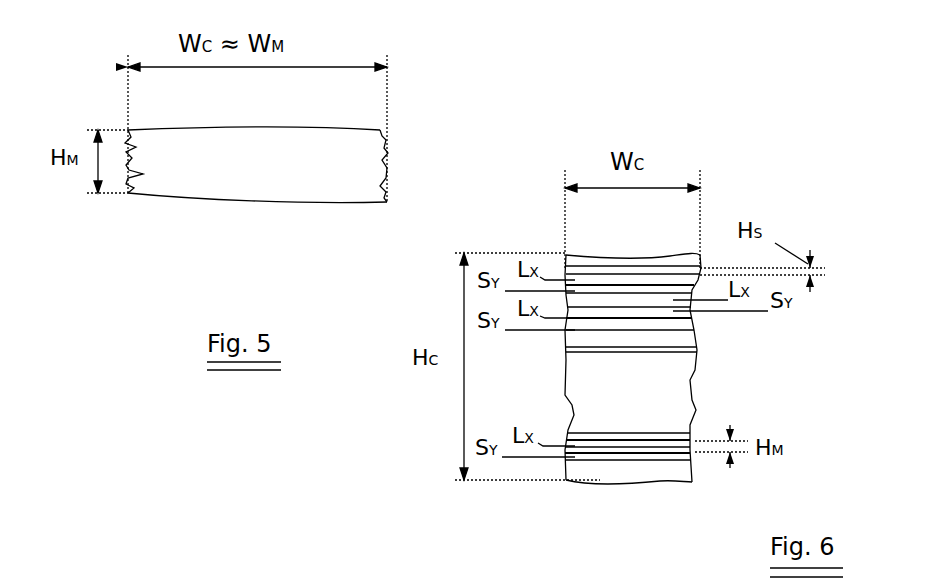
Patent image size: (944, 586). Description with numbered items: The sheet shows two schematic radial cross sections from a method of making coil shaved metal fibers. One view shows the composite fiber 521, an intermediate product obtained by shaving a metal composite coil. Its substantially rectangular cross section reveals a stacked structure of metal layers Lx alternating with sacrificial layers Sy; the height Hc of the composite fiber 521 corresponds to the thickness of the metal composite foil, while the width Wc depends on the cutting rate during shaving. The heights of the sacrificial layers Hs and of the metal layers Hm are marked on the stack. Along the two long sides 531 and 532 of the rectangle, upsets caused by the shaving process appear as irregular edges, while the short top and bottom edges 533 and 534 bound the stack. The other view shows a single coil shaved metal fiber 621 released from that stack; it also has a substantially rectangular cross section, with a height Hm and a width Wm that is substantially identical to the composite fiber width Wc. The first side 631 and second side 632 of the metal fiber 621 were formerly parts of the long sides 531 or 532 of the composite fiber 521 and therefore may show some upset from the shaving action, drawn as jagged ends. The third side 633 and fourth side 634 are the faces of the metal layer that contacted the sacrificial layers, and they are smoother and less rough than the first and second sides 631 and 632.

In FIG. 6, the composite fiber 521 is at (743, 168).
In FIG. 6, the long side of the rectangular cross section 531 is at (557, 393).
In FIG. 6, the long side of the rectangular cross section 532 is at (745, 365).
In FIG. 6, the top edge of the column 533 is at (619, 246).
In FIG. 6, the bottom edge of the column 534 is at (633, 508).
In FIG. 5, the coil shaved metal fiber 621 is at (226, 220).
In FIG. 6, the coil shaved metal fiber 621 is at (672, 447).
In FIG. 5, the first side 631 is at (405, 173).
In FIG. 5, the second side 632 is at (96, 146).
In FIG. 5, the third side 633 is at (278, 118).
In FIG. 5, the fourth side 634 is at (322, 215).